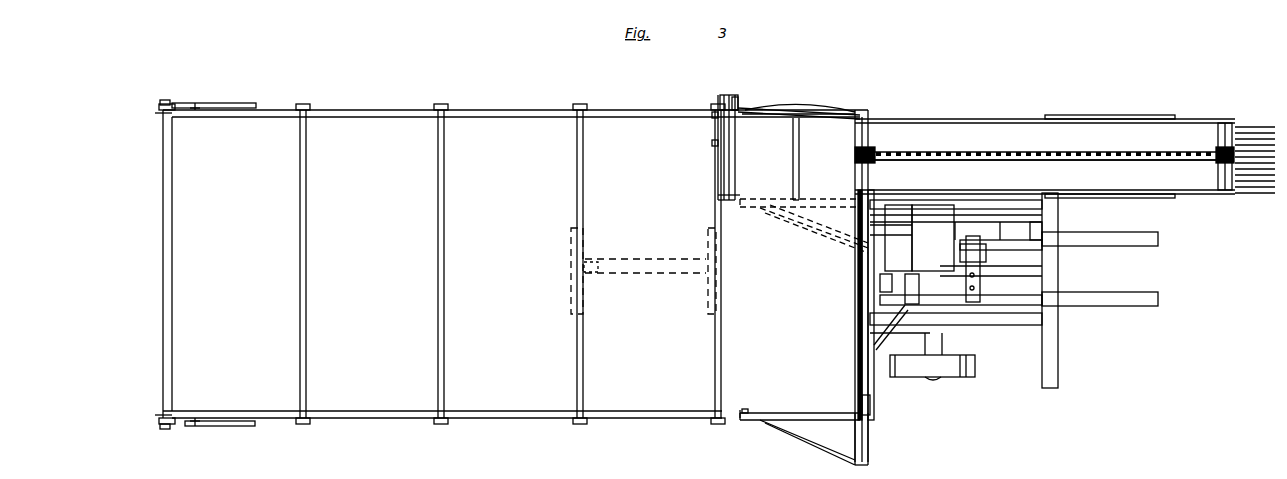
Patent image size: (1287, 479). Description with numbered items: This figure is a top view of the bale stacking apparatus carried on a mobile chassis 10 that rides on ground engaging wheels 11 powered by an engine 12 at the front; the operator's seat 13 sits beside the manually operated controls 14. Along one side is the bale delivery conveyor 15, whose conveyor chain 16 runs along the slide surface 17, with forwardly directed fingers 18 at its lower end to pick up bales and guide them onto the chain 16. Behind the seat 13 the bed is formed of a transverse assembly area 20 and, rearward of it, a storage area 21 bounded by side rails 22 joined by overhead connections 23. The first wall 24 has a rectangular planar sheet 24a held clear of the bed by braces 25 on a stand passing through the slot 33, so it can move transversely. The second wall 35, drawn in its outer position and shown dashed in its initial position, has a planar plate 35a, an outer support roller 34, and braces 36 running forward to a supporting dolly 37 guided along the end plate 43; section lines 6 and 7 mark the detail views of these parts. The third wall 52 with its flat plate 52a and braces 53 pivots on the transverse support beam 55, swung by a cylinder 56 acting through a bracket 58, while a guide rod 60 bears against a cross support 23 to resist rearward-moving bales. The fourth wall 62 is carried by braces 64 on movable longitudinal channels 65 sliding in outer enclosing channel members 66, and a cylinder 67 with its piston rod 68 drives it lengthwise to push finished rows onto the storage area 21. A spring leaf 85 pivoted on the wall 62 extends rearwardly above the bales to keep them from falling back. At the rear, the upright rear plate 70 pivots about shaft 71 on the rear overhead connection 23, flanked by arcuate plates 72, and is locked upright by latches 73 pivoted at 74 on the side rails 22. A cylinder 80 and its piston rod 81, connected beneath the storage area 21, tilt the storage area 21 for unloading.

The section line 6- 6 is at (708, 93).
The section line 7- 7 is at (875, 478).
The mobile chassis 10 is at (895, 326).
The ground engaging wheels 11 is at (958, 368).
The engine 12 is at (993, 310).
The seat 13 is at (933, 238).
The manually operated controls 14 is at (980, 253).
The bale delivery conveyor 15 is at (1000, 119).
The conveyor chain 16 is at (1098, 152).
The slide surface 17 is at (1044, 144).
The forwardly directed fingers 18 is at (1254, 197).
The assembly area 20 is at (818, 286).
The storage area 21 is at (515, 264).
The side rails 22 is at (172, 106).
The overhead connections 23 is at (300, 345).
The first wall 24 is at (775, 117).
The rectangular planar sheet 24a is at (787, 118).
The braces 25 is at (808, 107).
The slot 33 is at (800, 174).
The outer support roller 34 is at (738, 422).
The second wall 35 is at (752, 424).
The planar plate 35a is at (800, 424).
The braces 36 is at (805, 437).
The supporting dolly 37 is at (866, 420).
The end plate 43 is at (872, 404).
The third wall 52 is at (718, 170).
The flat plate 52a is at (730, 175).
The braces 53 is at (712, 145).
The transverse support beam 55 is at (722, 97).
The cylinder 56 is at (738, 100).
The bracket 58 is at (712, 118).
The guide rod 60 is at (718, 197).
The fourth wall 62 is at (855, 314).
The braces 64 is at (893, 205).
The movable longitudinal channels 65 is at (1068, 238).
The outer enclosing channel members 66 is at (956, 252).
The cylinder 67 is at (1003, 268).
The piston rod 68 is at (868, 265).
The rear plate 70 is at (163, 280).
The pivot shaft 71 is at (158, 113).
The arcuate plates 72 is at (228, 104).
The latches 73 is at (165, 100).
The latch pivot 74 is at (196, 108).
The cylinder 80 is at (634, 275).
The piston rod 81 is at (592, 275).
The spring leaf 85 is at (812, 224).